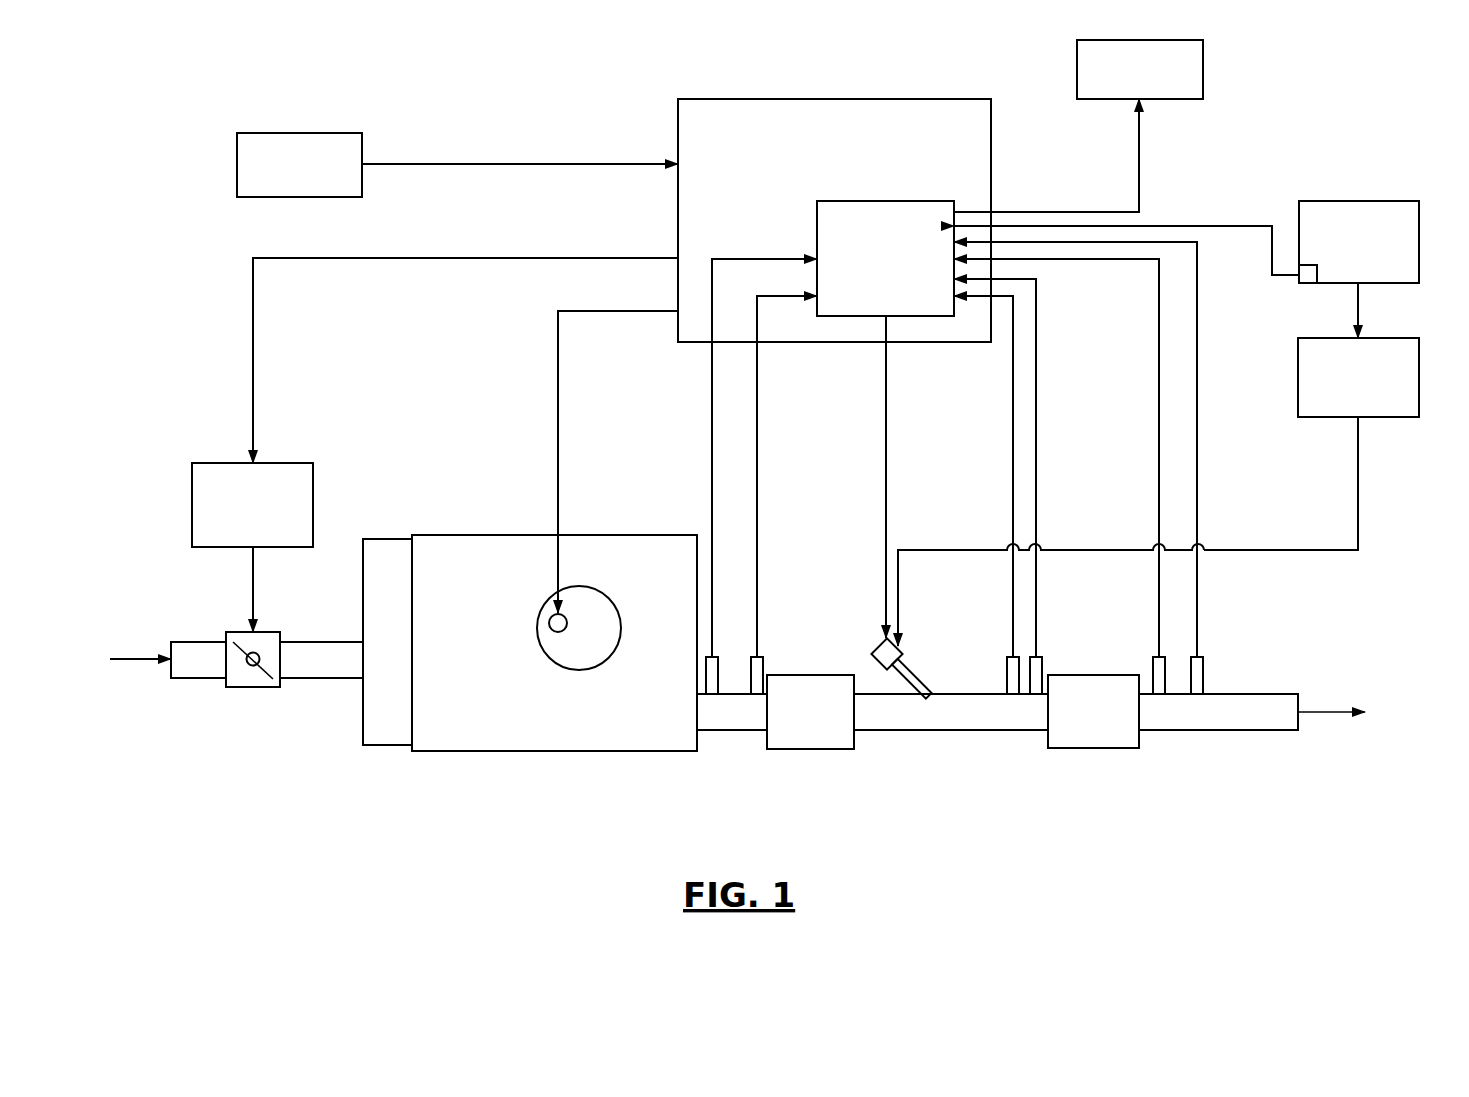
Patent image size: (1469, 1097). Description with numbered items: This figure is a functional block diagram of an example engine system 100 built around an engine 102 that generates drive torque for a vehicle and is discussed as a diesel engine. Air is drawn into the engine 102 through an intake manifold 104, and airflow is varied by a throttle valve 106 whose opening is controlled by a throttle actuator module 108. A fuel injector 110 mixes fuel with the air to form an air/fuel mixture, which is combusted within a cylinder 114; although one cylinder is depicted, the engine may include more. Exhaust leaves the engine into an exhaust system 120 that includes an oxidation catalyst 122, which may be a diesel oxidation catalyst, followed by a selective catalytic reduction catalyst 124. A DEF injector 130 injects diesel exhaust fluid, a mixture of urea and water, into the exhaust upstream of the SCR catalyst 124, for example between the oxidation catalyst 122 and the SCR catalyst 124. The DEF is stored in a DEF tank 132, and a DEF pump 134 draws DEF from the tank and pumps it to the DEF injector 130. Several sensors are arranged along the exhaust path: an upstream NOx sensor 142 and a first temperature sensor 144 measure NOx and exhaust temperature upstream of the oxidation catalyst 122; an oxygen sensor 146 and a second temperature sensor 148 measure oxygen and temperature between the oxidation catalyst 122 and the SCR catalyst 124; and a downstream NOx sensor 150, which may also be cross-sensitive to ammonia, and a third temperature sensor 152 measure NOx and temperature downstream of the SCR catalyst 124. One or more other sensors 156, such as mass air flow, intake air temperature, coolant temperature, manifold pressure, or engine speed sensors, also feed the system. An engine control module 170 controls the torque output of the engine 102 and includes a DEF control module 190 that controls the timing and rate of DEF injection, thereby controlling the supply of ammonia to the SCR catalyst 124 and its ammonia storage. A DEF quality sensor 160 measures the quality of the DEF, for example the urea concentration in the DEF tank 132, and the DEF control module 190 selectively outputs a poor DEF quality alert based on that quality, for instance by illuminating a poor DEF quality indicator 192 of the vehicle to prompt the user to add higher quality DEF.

The engine system 100 is at (218, 42).
The engine 102 is at (478, 535).
The intake manifold 104 is at (385, 539).
The throttle valve 106 is at (253, 687).
The throttle actuator module 108 is at (216, 463).
The fuel injector 110 is at (550, 618).
The cylinder 114 is at (579, 670).
The exhaust system 120 is at (1127, 855).
The oxidation catalyst 122 is at (820, 675).
The selective catalytic reduction catalyst 124 is at (1105, 748).
The DEF injector 130 is at (873, 650).
The DEF tank 132 is at (1350, 201).
The DEF pump 134 is at (1298, 378).
The upstream NOx sensor 142 is at (712, 698).
The first temperature sensor 144 is at (757, 698).
The oxygen sensor 146 is at (1013, 698).
The second temperature sensor 148 is at (1036, 698).
The downstream NOx sensor 150 is at (1153, 657).
The third temperature sensor 152 is at (1197, 696).
The other sensors 156 is at (298, 133).
The DEF quality sensor 160 is at (1299, 283).
The engine control module 170 is at (838, 99).
The DEF control module 190 is at (910, 201).
The poor DEF quality indicator 192 is at (1077, 66).